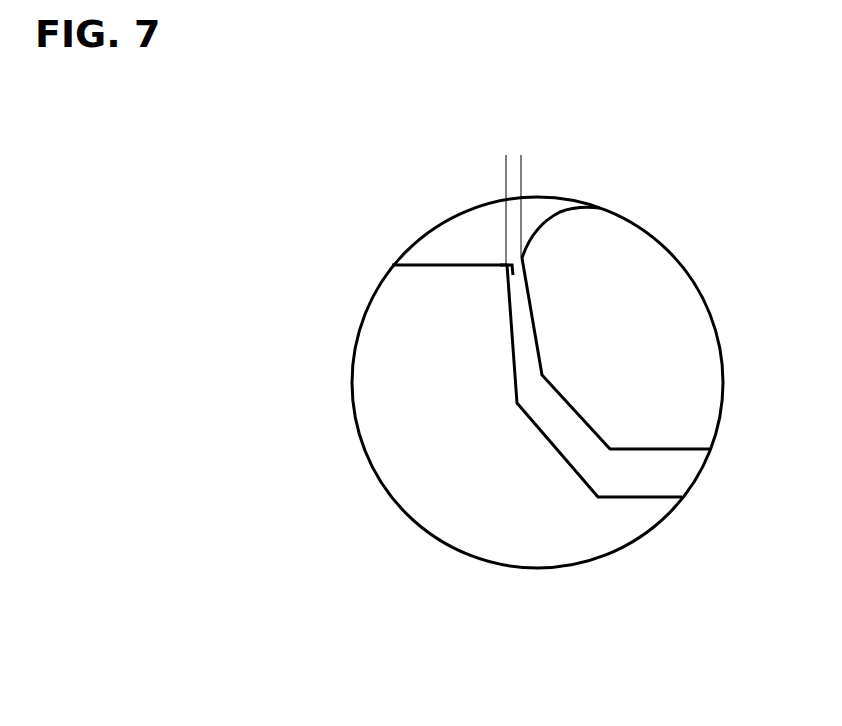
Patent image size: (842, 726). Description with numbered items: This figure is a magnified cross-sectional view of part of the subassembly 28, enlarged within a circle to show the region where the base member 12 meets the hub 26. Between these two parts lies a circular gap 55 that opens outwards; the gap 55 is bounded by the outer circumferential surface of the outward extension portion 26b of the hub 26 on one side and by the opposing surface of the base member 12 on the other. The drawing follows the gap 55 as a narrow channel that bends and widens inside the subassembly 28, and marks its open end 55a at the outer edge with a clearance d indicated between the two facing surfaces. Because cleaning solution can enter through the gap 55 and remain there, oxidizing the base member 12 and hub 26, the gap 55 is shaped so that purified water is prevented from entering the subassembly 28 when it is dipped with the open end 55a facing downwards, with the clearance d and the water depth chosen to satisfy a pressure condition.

The base member 12 is at (463, 490).
The gap 55 is at (520, 300).
The open end 55a is at (512, 263).
The outward extension portion 26b is at (573, 233).
The hub 26 is at (629, 283).
The subassembly 28 is at (565, 696).
The clearance d is at (557, 160).